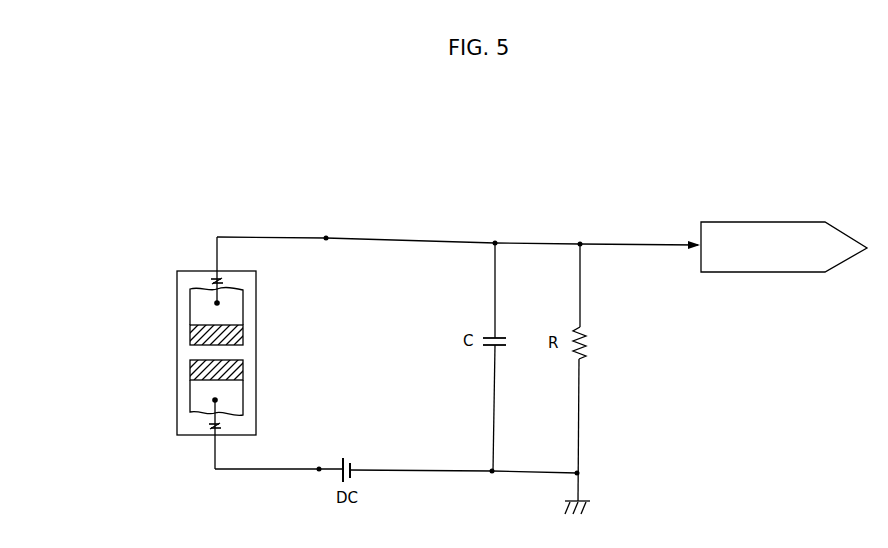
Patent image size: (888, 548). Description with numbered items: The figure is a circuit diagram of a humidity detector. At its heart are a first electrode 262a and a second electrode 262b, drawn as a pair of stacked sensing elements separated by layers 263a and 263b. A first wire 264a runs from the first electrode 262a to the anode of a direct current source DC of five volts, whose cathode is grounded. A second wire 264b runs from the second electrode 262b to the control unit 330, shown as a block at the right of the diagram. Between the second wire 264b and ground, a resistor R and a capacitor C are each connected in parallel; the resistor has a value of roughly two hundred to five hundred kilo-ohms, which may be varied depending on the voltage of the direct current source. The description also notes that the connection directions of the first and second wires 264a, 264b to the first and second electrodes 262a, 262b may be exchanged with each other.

The first electrode 262a is at (190, 393).
The second electrode 262b is at (190, 306).
The first dielectric layer 263a is at (190, 368).
The second dielectric layer 263b is at (190, 333).
The first wire 264a is at (215, 452).
The second wire 264b is at (217, 254).
The control unit 330 is at (747, 272).